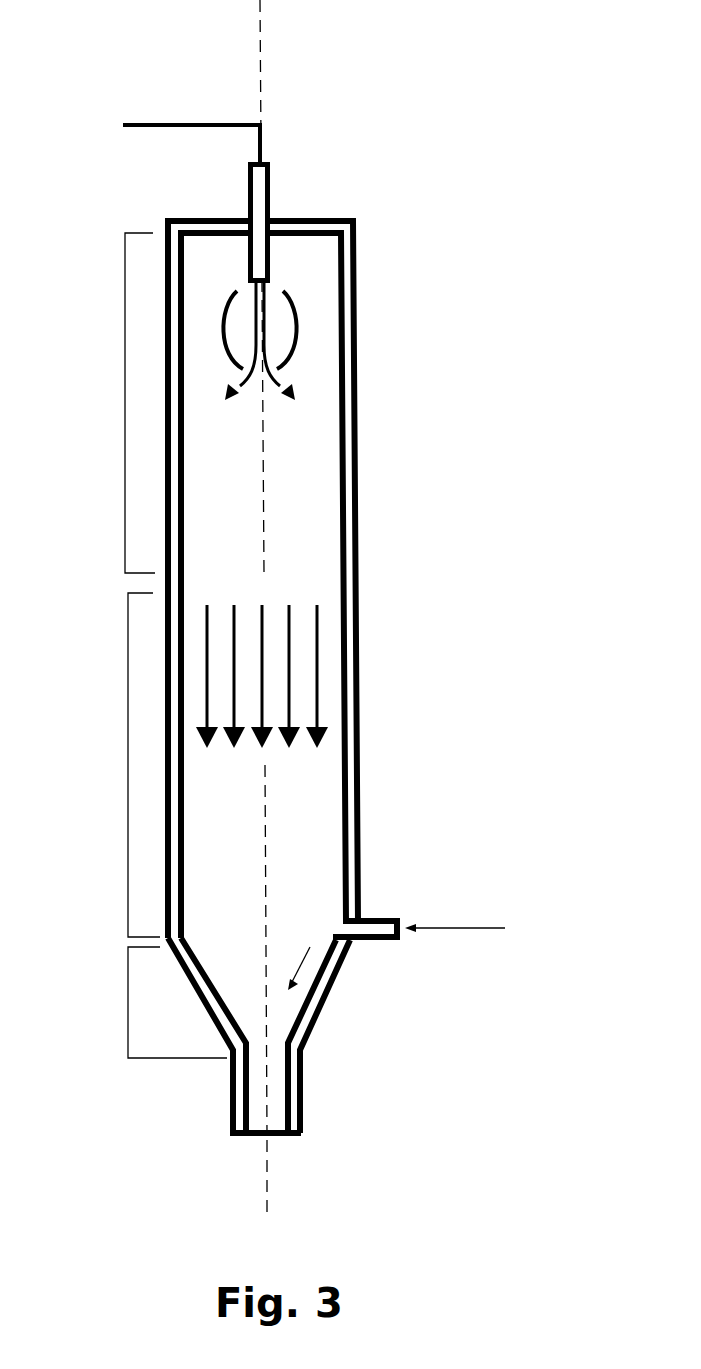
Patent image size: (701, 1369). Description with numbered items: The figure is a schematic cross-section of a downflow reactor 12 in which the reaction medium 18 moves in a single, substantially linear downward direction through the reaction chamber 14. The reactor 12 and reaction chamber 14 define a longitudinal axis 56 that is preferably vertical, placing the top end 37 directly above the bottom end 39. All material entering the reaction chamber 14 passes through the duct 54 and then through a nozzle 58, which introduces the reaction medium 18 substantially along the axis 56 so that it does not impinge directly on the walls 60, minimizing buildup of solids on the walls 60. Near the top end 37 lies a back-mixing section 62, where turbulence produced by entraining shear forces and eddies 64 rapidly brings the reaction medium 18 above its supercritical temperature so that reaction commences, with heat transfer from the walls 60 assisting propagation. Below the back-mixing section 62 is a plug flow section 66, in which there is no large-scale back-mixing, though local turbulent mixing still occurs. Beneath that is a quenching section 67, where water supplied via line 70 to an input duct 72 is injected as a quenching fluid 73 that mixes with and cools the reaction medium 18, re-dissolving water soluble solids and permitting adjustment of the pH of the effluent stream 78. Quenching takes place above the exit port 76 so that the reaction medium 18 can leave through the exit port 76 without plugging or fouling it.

The downflow reactor 12 is at (356, 445).
The reaction chamber 14 is at (210, 519).
The reaction medium 18 is at (264, 310).
The top end 37 is at (328, 218).
The bottom end 39 is at (210, 1010).
The duct 54 is at (168, 128).
The longitudinal axis 56 is at (262, 10).
The nozzle 58 is at (272, 172).
The walls 60 is at (356, 512).
The back-mixing section 62 is at (125, 383).
The eddies 64 is at (293, 340).
The plug flow section 66 is at (128, 758).
The quenching section 67 is at (128, 985).
The line 70 is at (465, 928).
The input duct 72 is at (378, 918).
The quenching fluid 73 is at (305, 963).
The exit port 76 is at (301, 1088).
The effluent stream 78 is at (266, 1183).